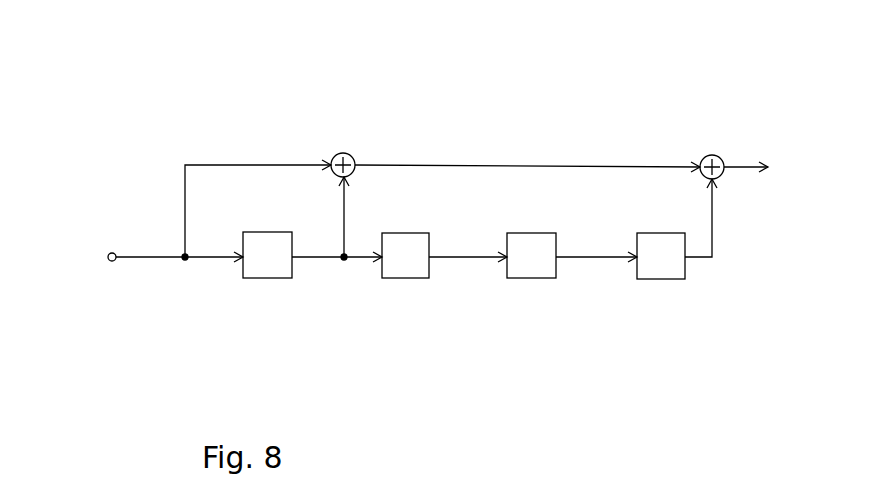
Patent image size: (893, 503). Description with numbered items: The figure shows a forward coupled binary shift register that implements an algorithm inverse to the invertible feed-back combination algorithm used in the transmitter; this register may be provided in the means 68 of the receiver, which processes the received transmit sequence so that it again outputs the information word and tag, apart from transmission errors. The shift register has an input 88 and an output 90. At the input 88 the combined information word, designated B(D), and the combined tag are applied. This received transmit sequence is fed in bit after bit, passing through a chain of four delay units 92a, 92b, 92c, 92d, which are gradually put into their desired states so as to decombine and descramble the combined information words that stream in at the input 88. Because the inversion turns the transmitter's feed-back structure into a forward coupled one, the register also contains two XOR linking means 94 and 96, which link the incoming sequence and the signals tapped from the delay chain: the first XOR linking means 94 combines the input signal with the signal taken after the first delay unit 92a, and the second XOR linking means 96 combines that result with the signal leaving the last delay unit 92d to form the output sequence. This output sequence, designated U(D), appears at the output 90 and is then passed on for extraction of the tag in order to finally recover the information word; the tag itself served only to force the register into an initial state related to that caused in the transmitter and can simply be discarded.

The means for processing with inverse algorithm 68 is at (468, 112).
The input 88 is at (110, 262).
The output 90 is at (745, 167).
The delay unit 92a is at (263, 278).
The delay unit 92b is at (403, 279).
The delay unit 92c is at (527, 279).
The delay unit 92d is at (660, 279).
The XOR linking means 94 is at (335, 160).
The XOR linking means 96 is at (703, 158).